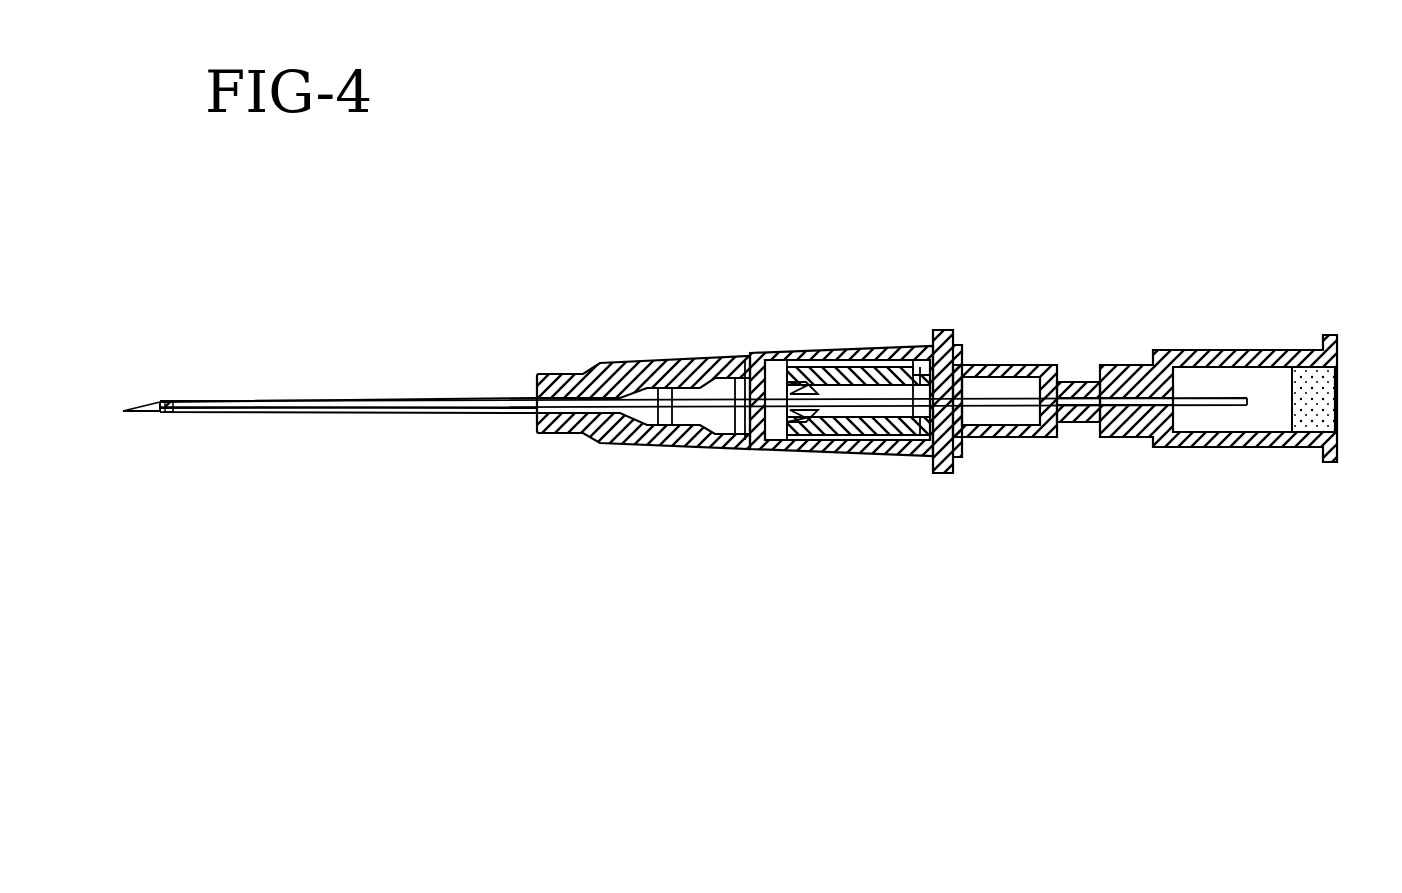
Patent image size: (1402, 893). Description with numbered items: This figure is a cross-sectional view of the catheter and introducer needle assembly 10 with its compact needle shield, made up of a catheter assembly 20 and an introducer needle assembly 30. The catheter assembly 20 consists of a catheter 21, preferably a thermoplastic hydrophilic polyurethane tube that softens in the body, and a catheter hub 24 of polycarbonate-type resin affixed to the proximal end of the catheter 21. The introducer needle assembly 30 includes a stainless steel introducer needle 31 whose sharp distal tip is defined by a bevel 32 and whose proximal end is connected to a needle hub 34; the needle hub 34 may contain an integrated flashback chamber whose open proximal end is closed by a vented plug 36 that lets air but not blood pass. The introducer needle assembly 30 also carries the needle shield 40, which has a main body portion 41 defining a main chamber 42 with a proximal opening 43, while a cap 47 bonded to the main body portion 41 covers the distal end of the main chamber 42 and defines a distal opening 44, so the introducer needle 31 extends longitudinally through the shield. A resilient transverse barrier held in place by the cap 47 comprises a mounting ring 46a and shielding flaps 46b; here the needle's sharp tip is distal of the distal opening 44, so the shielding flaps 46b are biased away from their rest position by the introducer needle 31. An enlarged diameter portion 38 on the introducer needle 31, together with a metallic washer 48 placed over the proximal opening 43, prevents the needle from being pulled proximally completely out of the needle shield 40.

The catheter and introducer needle assembly 10 is at (893, 196).
The catheter assembly 20 is at (503, 364).
The catheter 21 is at (322, 414).
The catheter hub 24 is at (676, 450).
The introducer needle assembly 30 is at (1158, 344).
The introducer needle 31 is at (1024, 410).
The bevel 32 is at (126, 405).
The needle hub 34 is at (1232, 450).
The vented plug 36 is at (1342, 406).
The enlarged diameter portion 38 is at (176, 404).
The needle shield 40 is at (852, 455).
The main body portion 41 is at (893, 412).
The main chamber 42 is at (912, 422).
The proximal opening 43 is at (990, 400).
The distal opening 44 is at (745, 368).
The mounting ring 46a is at (830, 380).
The shielding flaps 46b is at (802, 422).
The cap 47 is at (762, 450).
The metallic washer 48 is at (948, 345).